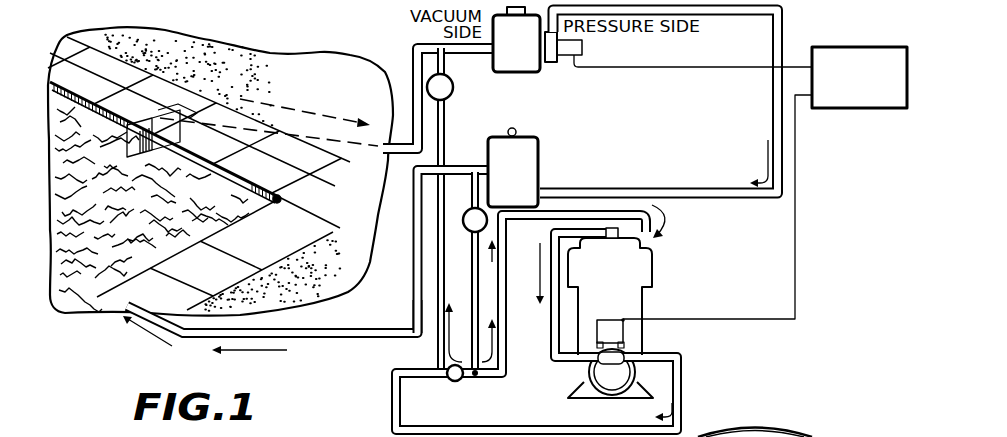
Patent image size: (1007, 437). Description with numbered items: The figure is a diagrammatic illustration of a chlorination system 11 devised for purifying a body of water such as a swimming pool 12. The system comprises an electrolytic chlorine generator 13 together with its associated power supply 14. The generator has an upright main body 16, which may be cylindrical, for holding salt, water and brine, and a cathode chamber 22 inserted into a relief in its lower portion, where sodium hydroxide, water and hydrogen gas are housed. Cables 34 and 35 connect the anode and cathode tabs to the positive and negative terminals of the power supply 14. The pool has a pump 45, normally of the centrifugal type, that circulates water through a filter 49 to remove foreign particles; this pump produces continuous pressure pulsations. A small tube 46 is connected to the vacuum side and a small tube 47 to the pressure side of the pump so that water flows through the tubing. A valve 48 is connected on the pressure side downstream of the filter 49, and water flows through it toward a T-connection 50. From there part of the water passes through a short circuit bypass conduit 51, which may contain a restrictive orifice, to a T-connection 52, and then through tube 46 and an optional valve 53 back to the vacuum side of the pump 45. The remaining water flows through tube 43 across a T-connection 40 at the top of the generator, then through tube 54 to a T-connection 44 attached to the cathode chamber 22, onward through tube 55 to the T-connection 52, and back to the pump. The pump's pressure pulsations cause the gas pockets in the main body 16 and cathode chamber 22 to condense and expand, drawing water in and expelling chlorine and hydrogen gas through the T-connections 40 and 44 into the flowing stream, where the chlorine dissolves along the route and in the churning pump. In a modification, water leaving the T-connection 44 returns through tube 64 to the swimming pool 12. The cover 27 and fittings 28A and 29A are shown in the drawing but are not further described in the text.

The chlorination system 11 is at (823, 26).
The swimming pool 12 is at (326, 190).
The electrolytic chlorine generator 13 is at (690, 258).
The power supply 14 is at (878, 47).
The main body 16 is at (645, 304).
The cathode chamber 22 is at (606, 396).
The cover 27 is at (823, 421).
The inlet fitting 28A is at (592, 358).
The electrical lead 29A is at (627, 346).
The cable 34 is at (602, 319).
The cable 35 is at (626, 337).
The T-connection 40 is at (608, 239).
The tube 43 is at (507, 262).
The T-connection 44 is at (610, 373).
The pump 45 is at (526, 60).
The tube 46 is at (444, 120).
The tube 47 is at (442, 252).
The valve 48 is at (462, 212).
The filter 49 is at (538, 135).
The T-connection 50 is at (479, 378).
The short circuit bypass conduit 51 is at (448, 380).
The T-connection 52 is at (432, 370).
The valve 53 is at (453, 90).
The tube 54 is at (550, 335).
The tube 55 is at (541, 401).
The tube 64 is at (310, 342).